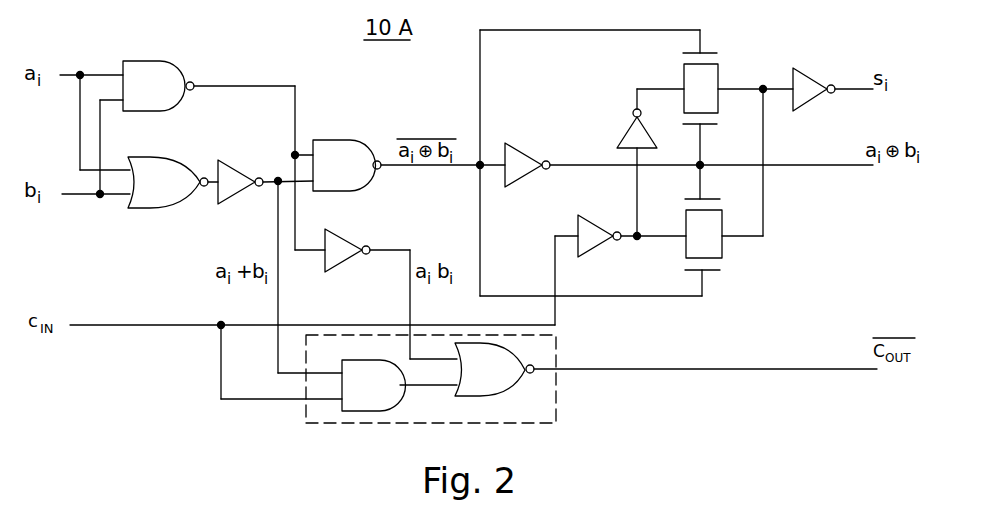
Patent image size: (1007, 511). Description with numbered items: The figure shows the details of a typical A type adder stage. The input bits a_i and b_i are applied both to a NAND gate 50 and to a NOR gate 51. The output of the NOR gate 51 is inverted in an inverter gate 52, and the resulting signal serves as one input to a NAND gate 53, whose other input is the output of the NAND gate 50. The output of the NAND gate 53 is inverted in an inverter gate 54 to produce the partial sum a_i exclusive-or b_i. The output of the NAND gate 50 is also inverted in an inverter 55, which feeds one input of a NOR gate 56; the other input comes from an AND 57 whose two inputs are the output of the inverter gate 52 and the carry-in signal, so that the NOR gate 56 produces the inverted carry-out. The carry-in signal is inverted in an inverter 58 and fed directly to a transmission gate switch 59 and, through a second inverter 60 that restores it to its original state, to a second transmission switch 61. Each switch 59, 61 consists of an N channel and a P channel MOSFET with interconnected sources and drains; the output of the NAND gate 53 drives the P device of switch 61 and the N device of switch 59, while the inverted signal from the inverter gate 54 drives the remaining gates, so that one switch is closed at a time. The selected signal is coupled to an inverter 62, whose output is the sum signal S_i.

The NAND gate 50 is at (158, 86).
The NOR gate 51 is at (168, 182).
The inverter gate 52 is at (228, 177).
The NAND gate 53 is at (347, 165).
The inverter gate 54 is at (517, 160).
The inverter 55 is at (334, 248).
The NOR gate 56 is at (494, 369).
The AND gate 57 is at (374, 385).
The inverter 58 is at (588, 232).
The transmission gate switch 59 is at (723, 248).
The second inverter 60 is at (633, 133).
The second transmission switch 61 is at (720, 80).
The inverter 62 is at (801, 81).